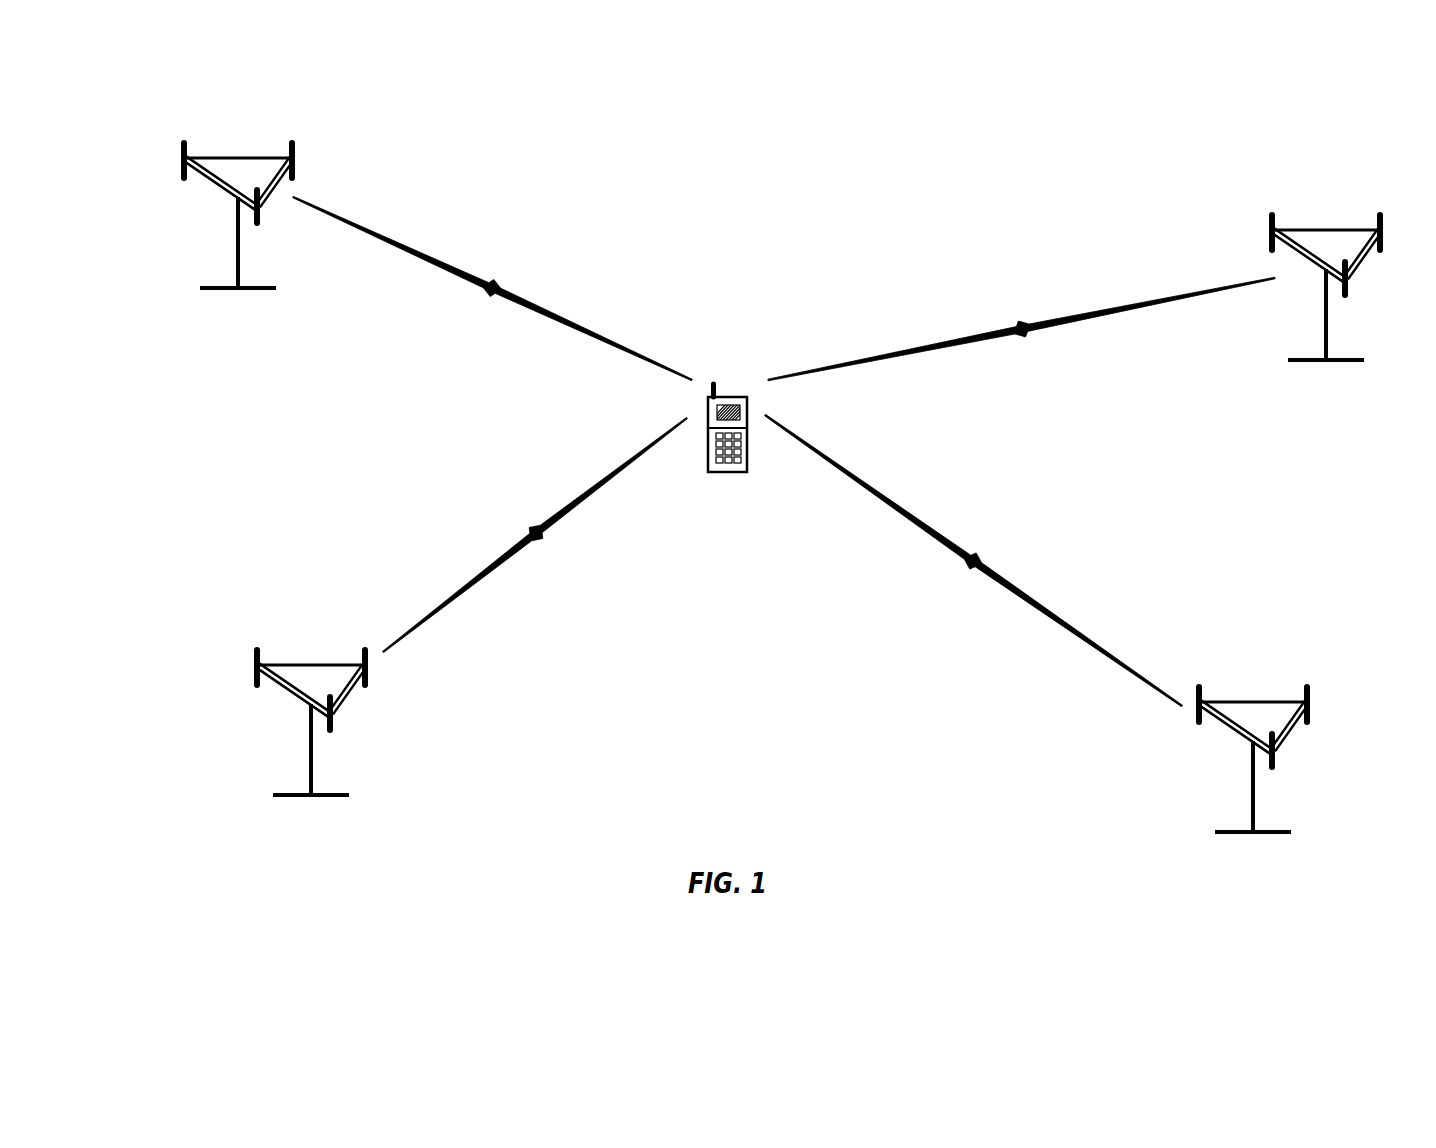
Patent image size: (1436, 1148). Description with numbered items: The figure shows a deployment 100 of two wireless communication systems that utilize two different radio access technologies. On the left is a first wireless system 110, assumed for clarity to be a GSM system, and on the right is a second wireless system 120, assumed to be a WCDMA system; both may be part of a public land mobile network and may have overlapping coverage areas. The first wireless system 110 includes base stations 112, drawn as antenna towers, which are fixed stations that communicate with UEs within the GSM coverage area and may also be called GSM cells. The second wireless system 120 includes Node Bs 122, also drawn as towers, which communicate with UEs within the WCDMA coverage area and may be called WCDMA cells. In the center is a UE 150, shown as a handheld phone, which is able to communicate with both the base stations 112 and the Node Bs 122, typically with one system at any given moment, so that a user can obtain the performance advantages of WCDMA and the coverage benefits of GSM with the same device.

The deployment 100 is at (745, 132).
The first wireless system 110 is at (292, 512).
The base stations 112 is at (229, 157).
The second wireless system 120 is at (1307, 564).
The Node Bs 122 is at (1290, 530).
The UE 150 is at (730, 395).